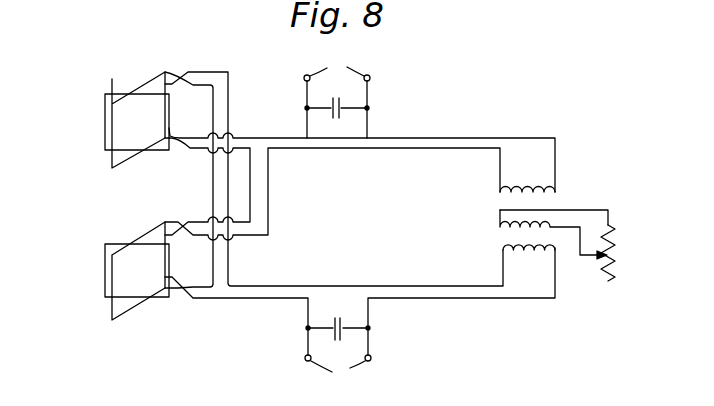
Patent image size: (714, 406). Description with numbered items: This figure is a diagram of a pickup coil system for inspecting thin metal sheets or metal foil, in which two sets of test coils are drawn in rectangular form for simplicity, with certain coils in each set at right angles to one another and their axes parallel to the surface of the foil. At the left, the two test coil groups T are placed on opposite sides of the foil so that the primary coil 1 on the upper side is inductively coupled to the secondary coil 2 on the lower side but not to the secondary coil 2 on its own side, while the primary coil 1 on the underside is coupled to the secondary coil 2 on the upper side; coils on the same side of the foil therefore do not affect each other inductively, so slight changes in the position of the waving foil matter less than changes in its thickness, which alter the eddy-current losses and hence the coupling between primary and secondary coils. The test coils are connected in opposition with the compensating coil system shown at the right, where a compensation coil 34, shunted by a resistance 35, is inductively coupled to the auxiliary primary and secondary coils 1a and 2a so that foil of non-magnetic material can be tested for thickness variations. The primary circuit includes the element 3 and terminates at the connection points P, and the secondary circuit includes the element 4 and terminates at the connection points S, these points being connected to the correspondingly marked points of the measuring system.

The primary coil 1 is at (143, 235).
The secondary coil 2 is at (140, 195).
The telephone receivers T is at (98, 185).
The primary connection point P is at (337, 89).
The condenser 3 is at (337, 95).
The condenser 4 is at (338, 316).
The secondary connection point S is at (338, 376).
The auxiliary primary coil 1a is at (522, 183).
The auxiliary secondary coil 2a is at (532, 257).
The compensation coil 34 is at (500, 222).
The shunt resistance 35 is at (613, 243).